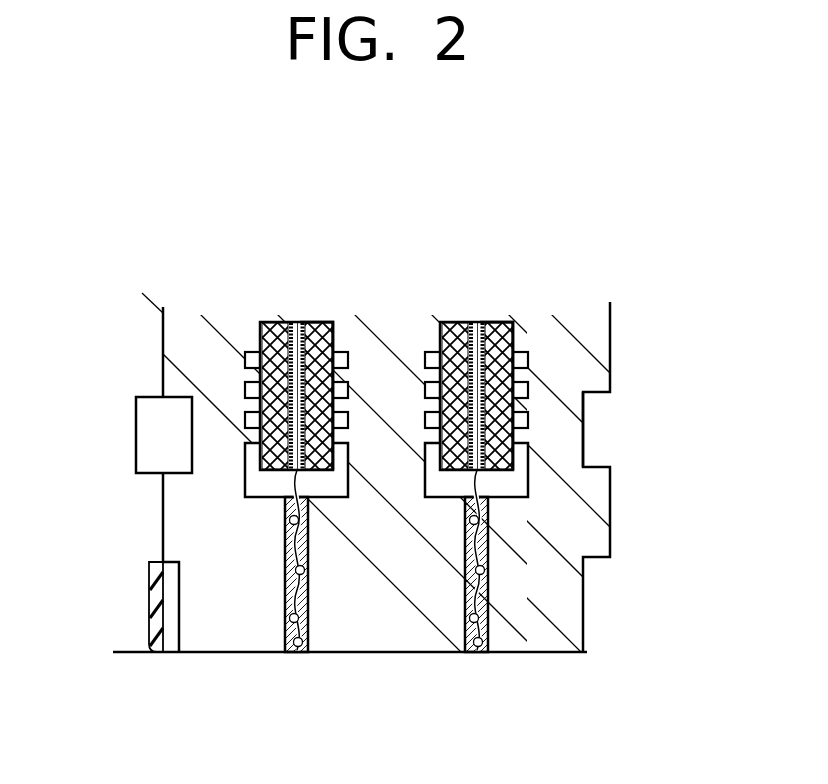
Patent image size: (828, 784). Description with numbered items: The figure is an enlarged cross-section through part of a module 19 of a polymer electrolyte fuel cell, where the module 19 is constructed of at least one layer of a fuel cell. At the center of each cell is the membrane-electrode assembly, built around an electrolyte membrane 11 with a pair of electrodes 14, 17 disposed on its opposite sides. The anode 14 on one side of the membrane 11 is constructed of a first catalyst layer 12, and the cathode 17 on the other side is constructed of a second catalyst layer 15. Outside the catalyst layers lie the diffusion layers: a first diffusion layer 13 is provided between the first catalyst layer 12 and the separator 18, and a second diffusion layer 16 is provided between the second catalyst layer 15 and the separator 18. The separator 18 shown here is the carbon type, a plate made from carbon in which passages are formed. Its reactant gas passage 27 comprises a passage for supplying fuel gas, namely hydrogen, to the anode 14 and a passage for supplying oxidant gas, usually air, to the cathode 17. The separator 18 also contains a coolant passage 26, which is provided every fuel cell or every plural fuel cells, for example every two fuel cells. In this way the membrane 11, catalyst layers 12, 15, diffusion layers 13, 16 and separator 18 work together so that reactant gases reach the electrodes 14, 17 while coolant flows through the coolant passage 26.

The electrolyte membrane 11 is at (297, 322).
The first catalyst layer 12 is at (279, 322).
The first diffusion layer 13 is at (268, 322).
The anode 14 is at (288, 183).
The second catalyst layer 15 is at (318, 322).
The second diffusion layer 16 is at (333, 322).
The cathode 17 is at (373, 178).
The separator 18 is at (140, 338).
The module 19 is at (618, 663).
The coolant passage 26 is at (160, 432).
The reactant gas passage 27 is at (245, 355).